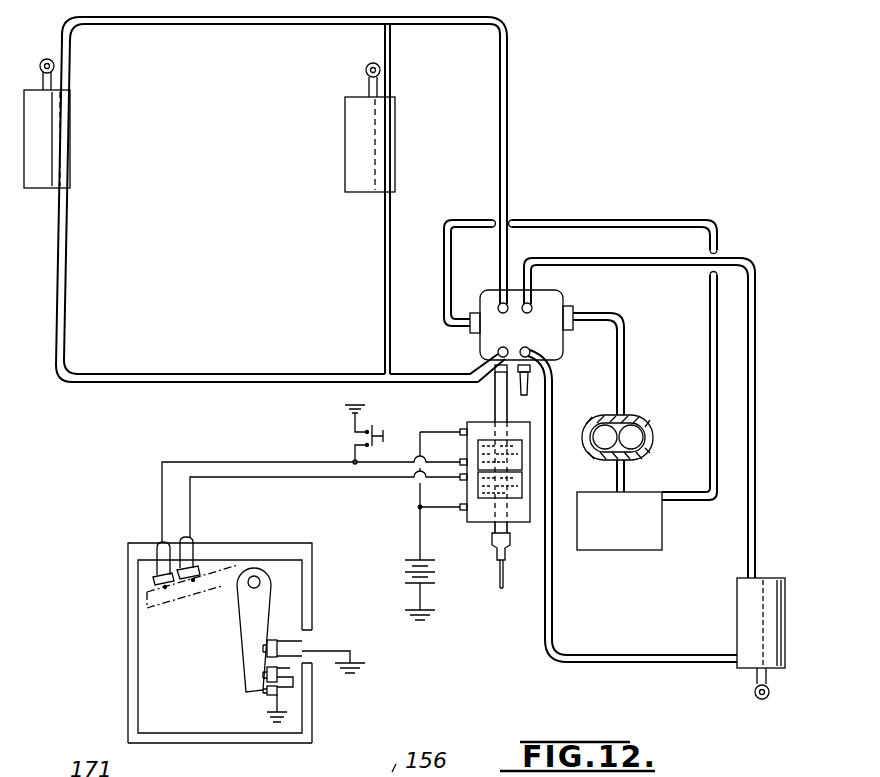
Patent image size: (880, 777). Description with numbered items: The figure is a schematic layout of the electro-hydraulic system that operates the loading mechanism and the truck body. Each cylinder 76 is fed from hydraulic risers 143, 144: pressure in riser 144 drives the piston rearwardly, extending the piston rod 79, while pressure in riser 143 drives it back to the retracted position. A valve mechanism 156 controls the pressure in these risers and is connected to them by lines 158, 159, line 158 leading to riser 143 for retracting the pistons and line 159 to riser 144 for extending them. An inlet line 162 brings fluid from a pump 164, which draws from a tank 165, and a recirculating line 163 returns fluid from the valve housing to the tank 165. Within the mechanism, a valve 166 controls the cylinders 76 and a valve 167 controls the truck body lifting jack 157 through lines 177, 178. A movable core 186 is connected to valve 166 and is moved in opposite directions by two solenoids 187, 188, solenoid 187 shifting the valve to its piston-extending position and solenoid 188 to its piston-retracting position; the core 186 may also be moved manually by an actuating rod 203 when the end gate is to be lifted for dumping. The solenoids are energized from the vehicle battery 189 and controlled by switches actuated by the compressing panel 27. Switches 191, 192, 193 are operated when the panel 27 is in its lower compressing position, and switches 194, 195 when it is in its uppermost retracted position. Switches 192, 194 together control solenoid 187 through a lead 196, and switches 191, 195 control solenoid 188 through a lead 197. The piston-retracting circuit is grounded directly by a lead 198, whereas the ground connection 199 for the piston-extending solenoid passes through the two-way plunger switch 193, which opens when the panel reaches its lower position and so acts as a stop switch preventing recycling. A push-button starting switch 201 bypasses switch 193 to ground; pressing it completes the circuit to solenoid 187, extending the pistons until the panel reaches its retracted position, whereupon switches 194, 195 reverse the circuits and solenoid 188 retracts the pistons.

The hydraulic riser 143 is at (68, 44).
The hydraulic riser 144 is at (60, 262).
The line 158 is at (508, 96).
The piston rod 79 is at (48, 82).
The cylinder 76 is at (55, 122).
The recirculating line 163 is at (612, 222).
The valve mechanism 156 is at (580, 290).
The line 159 is at (455, 368).
The valve 166 is at (492, 368).
The valve 167 is at (545, 362).
The line 177 is at (748, 510).
The inlet line 162 is at (620, 346).
The pump 164 is at (662, 410).
The tank 165 is at (648, 537).
The truck body lifting jack 157 is at (757, 612).
The line 178 is at (553, 588).
The movable core 186 is at (495, 400).
The actuating rod 203 is at (490, 580).
The solenoid 188 is at (530, 486).
The solenoid 187 is at (530, 462).
The push-button starting switch 201 is at (375, 432).
The lead 196 is at (292, 426).
The lead 197 is at (320, 478).
The vehicle battery 189 is at (403, 565).
The switch 194 is at (153, 580).
The switch 195 is at (200, 565).
The compressing panel 27 is at (236, 643).
The switch 191 is at (272, 640).
The lead 198 is at (314, 642).
The switch 192 is at (265, 675).
The switch 193 is at (268, 700).
The ground connection 199 is at (292, 709).